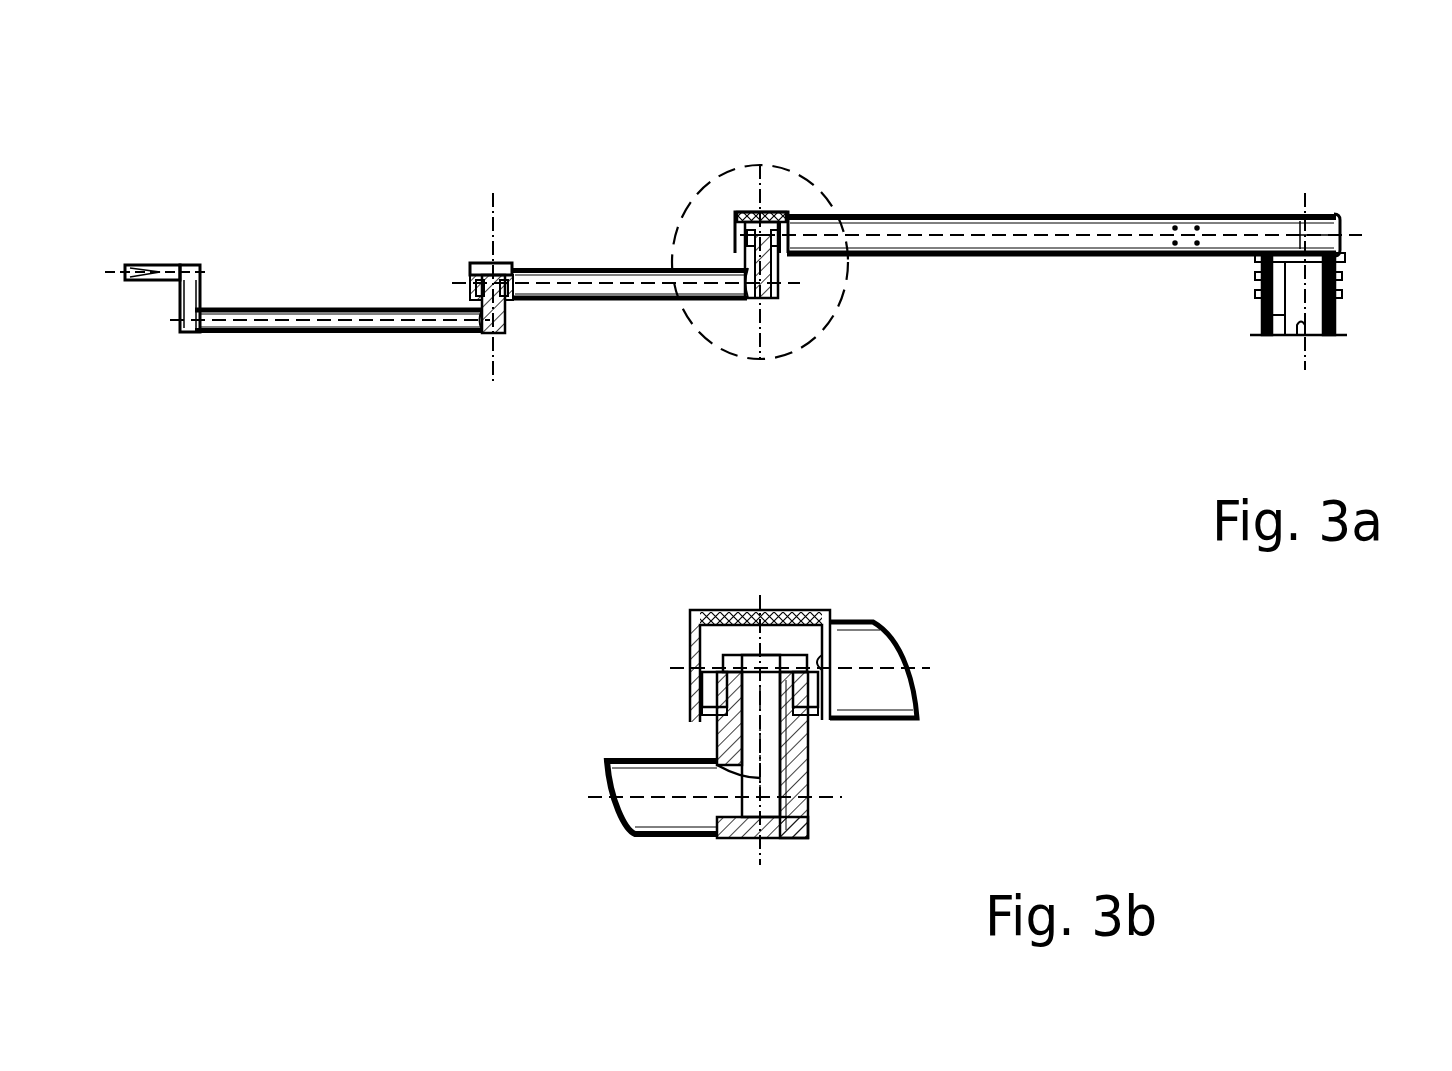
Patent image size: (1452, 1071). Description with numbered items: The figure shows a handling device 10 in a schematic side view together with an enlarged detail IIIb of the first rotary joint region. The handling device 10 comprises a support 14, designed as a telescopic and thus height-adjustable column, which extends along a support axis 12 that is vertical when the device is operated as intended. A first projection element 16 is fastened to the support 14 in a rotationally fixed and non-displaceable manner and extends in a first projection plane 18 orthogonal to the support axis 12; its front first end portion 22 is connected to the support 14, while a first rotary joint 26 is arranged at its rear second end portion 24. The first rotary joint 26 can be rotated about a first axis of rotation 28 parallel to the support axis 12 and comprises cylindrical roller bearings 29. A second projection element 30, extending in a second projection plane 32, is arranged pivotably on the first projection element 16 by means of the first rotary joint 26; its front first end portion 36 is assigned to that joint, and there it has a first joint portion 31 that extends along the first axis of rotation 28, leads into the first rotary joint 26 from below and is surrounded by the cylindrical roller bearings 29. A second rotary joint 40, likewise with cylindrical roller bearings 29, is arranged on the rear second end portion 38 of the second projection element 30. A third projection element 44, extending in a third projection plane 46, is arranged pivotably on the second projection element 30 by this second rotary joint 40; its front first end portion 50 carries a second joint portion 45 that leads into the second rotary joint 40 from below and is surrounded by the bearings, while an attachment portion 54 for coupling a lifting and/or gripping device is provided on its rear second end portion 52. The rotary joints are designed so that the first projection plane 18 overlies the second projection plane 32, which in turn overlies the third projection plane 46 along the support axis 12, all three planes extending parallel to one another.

In FIG. 3A, the handling device 10 is at (140, 150).
In FIG. 3A, the support axis 12 is at (1305, 360).
In FIG. 3A, the support 14 is at (1318, 300).
In FIG. 3A, the first projection element 16 is at (1066, 191).
In FIG. 3B, the first projection element 16 is at (834, 630).
In FIG. 3A, the first projection plane 18 is at (1100, 230).
In FIG. 3B, the first projection plane 18 is at (927, 676).
In FIG. 3A, the front first end portion 22 is at (1325, 225).
In FIG. 3A, the rear second end portion 24 is at (805, 266).
In FIG. 3A, the first rotary joint 26 is at (738, 222).
In FIG. 3B, the first rotary joint 26 is at (717, 618).
In FIG. 3B, the first axis of rotation 28 is at (818, 780).
In FIG. 3B, the cylindrical roller bearings 29 is at (713, 690).
In FIG. 3A, the second projection element 30 is at (550, 280).
In FIG. 3B, the second projection element 30 is at (653, 813).
In FIG. 3A, the first joint portion 31 is at (780, 272).
In FIG. 3B, the first joint portion 31 is at (790, 770).
In FIG. 3A, the second projection plane 32 is at (626, 238).
In FIG. 3B, the second projection plane 32 is at (691, 800).
In FIG. 3A, the front first end portion 36 is at (742, 270).
In FIG. 3A, the rear second end portion 38 is at (512, 300).
In FIG. 3A, the second rotary joint 40 is at (497, 313).
In FIG. 3A, the third projection element 44 is at (330, 280).
In FIG. 3A, the second joint portion 45 is at (508, 335).
In FIG. 3A, the third projection plane 46 is at (300, 318).
In FIG. 3A, the front first end portion 50 is at (480, 322).
In FIG. 3A, the rear second end portion 52 is at (193, 332).
In FIG. 3A, the attachment portion 54 is at (172, 270).
In FIG. 3A, the detail view circle IIIb is at (785, 357).